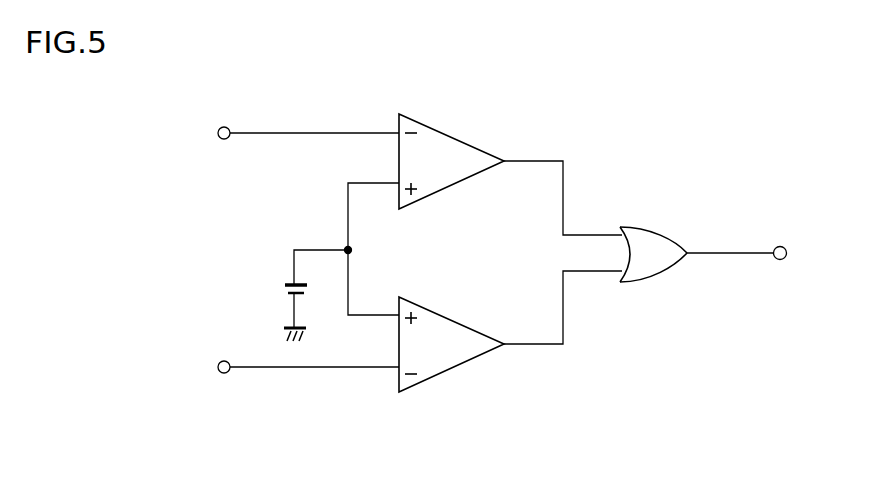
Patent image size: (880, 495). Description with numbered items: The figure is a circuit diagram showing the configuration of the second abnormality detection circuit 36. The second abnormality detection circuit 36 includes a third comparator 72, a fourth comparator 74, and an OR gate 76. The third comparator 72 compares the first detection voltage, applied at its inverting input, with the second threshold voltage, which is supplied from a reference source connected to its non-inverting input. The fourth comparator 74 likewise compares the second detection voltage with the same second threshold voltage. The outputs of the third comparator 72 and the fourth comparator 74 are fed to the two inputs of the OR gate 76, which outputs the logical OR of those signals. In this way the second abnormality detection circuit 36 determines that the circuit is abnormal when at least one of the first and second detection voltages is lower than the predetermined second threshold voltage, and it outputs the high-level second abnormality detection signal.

The second abnormality detection circuit 36 is at (507, 481).
The third comparator 72 is at (453, 135).
The fourth comparator 74 is at (453, 320).
The OR gate 76 is at (657, 228).